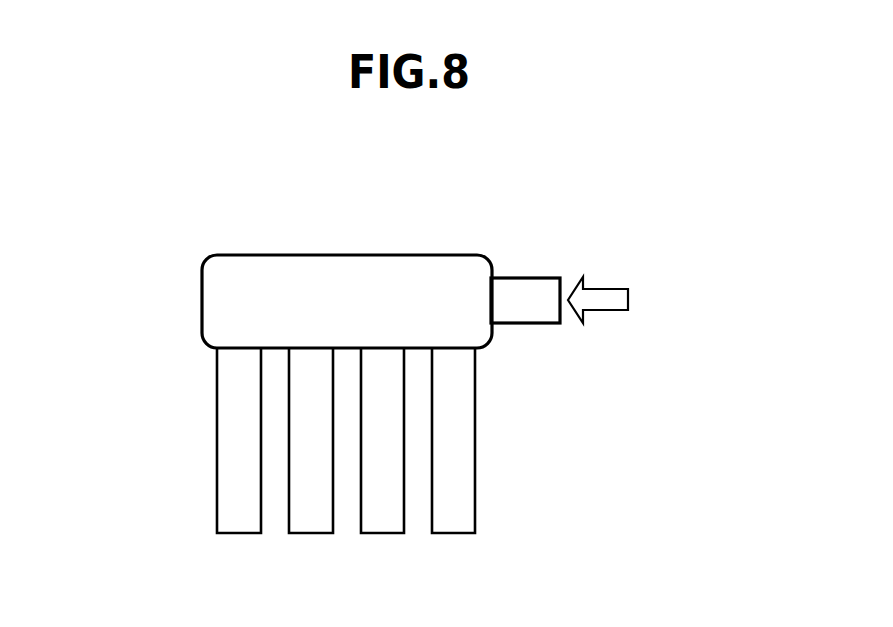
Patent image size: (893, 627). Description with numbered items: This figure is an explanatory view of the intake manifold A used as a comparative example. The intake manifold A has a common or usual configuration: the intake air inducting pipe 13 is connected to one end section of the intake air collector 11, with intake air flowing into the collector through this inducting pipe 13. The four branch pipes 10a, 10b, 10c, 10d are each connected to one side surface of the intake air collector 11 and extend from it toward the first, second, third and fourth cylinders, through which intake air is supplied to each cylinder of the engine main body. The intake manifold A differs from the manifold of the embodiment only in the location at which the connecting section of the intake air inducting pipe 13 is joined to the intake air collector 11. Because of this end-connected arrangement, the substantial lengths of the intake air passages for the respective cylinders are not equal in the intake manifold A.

The intake manifold A is at (174, 235).
The intake air collector 11 is at (363, 267).
The intake air inducting pipe 13 is at (517, 288).
The branch pipe 10a is at (457, 388).
The branch pipe 10b is at (390, 467).
The branch pipe 10c is at (308, 483).
The branch pipe 10d is at (234, 405).